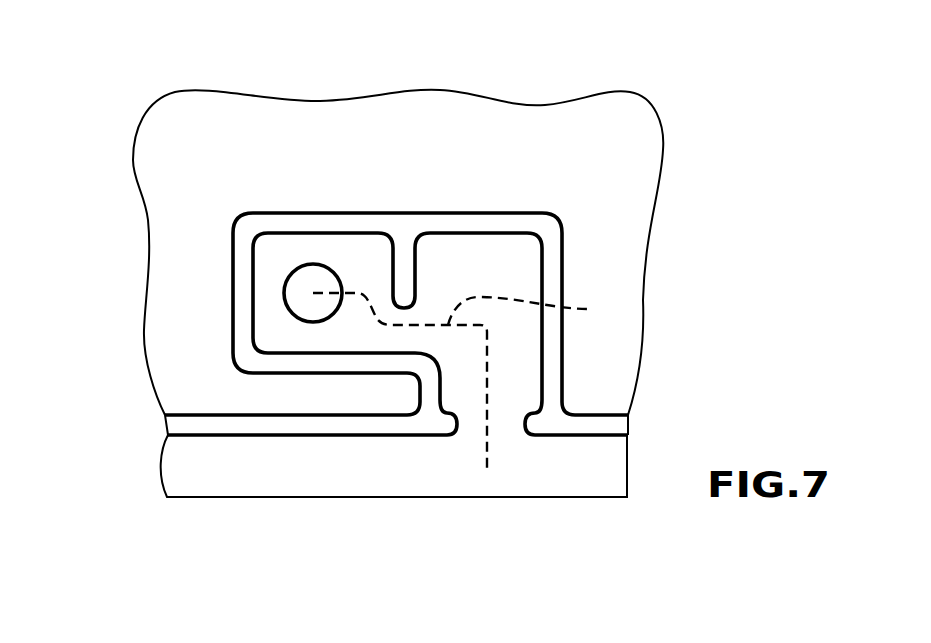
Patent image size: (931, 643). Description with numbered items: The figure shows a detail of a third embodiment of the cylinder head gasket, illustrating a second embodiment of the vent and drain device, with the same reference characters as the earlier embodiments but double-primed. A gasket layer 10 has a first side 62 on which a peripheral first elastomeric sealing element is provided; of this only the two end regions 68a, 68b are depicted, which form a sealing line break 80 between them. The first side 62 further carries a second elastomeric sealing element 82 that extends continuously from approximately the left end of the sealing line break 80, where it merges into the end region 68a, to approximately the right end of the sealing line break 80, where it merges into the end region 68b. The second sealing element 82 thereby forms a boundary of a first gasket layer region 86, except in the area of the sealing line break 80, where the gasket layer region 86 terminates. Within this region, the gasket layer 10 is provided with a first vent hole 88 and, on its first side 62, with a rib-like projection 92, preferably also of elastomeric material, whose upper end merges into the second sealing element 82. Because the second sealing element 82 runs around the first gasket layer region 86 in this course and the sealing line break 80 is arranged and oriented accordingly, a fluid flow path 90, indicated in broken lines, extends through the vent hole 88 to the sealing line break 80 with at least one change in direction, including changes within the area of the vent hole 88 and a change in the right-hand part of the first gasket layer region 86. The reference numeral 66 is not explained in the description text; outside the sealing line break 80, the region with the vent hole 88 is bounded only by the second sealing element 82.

The gasket layer 10 is at (398, 170).
The first side 62 is at (178, 210).
The base plate 66 is at (373, 498).
The sealing element end region 68a is at (272, 425).
The sealing element end region 68b is at (600, 425).
The sealing line break 80 is at (475, 435).
The second elastomeric sealing element 82 is at (457, 225).
The first gasket layer region 86 is at (515, 338).
The first vent hole 88 is at (305, 277).
The fluid flow path 90 is at (590, 309).
The projection 92 is at (403, 285).